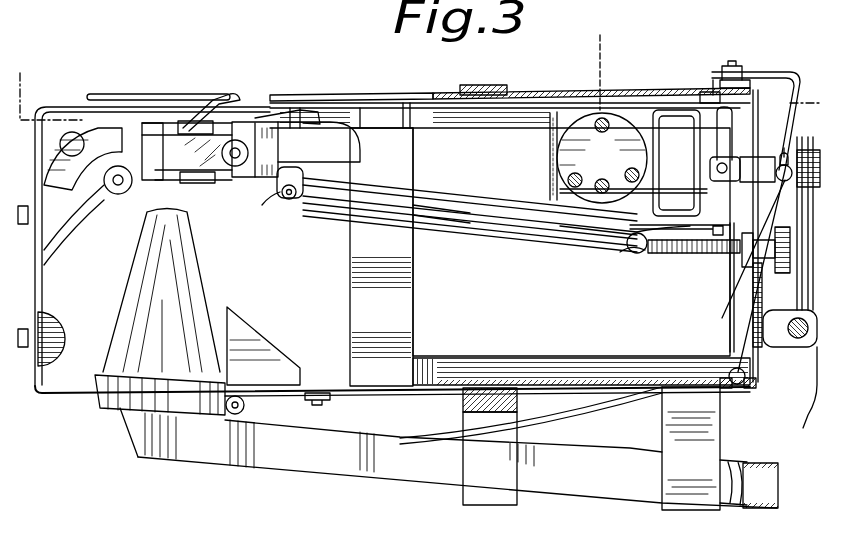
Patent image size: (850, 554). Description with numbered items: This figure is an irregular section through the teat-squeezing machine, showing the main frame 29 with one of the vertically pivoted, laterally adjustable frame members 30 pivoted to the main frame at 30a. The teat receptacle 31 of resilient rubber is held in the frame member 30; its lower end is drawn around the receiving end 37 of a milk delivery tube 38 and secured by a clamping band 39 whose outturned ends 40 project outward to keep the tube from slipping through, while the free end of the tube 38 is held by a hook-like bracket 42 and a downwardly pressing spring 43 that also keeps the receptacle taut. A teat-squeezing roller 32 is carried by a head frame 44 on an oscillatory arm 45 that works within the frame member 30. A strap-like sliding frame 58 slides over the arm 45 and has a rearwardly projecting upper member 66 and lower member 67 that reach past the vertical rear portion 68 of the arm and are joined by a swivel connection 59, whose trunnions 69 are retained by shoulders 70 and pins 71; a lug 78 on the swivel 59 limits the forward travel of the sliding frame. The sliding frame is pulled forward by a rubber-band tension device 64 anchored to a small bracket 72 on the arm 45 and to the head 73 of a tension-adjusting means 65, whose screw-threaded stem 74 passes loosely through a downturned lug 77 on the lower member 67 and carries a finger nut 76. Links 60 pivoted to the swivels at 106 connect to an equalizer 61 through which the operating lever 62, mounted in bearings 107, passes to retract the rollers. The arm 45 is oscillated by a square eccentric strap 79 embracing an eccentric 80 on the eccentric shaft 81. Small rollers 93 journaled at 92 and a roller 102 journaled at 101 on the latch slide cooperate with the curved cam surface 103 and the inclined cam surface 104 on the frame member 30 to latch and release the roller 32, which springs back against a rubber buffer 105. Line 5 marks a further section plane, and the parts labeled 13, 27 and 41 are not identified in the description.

The section line 5 is at (421, 88).
The rack bar 13 is at (622, 260).
The link 27 is at (268, 200).
The main frame 29 is at (472, 85).
The frame member 30 is at (399, 95).
The pivot 30a is at (740, 70).
The teat receptacle 31 is at (213, 103).
The teat-squeezing roller 32 is at (132, 94).
The receiving end 37 is at (143, 399).
The milk delivery tube 38 is at (315, 462).
The clamping band 39 is at (160, 395).
The outturned end 40 is at (262, 405).
The mounting plate 41 is at (270, 414).
The hook-like bracket 42 is at (686, 505).
The downwardly pressing spring 43 is at (588, 413).
The head frame 44 is at (228, 126).
The oscillatory arm 45 is at (473, 208).
The sliding frame 58 is at (284, 126).
The swivel connection 59 is at (723, 128).
The link 60 is at (766, 167).
The equalizer 61 is at (725, 257).
The operating lever 62 is at (792, 347).
The tension device 64 is at (323, 212).
The tension-device-adjusting means 65 is at (690, 252).
The upper member 66 is at (282, 125).
The lower member 67 is at (500, 216).
The vertical rear portion 68 is at (560, 236).
The trunnion 69 is at (605, 250).
The shoulder 70 is at (676, 163).
The pin 71 is at (700, 92).
The small bracket 72 is at (298, 200).
The head 73 is at (640, 264).
The screw-threaded stem 74 is at (657, 257).
The finger nut 76 is at (770, 270).
The lug 77 is at (742, 266).
The lug 78 is at (707, 161).
The square eccentric strap 79 is at (557, 130).
The eccentric 80 is at (602, 158).
The eccentric shaft 81 is at (583, 190).
The journal 92 is at (114, 192).
The small roller 93 is at (96, 205).
The journal 101 is at (233, 166).
The roller 102 is at (248, 153).
The cam surface 103 is at (80, 185).
The cam surface 104 is at (285, 362).
The rubber buffer 105 is at (60, 328).
The pivot 106 is at (735, 162).
The bearing 107 is at (805, 294).